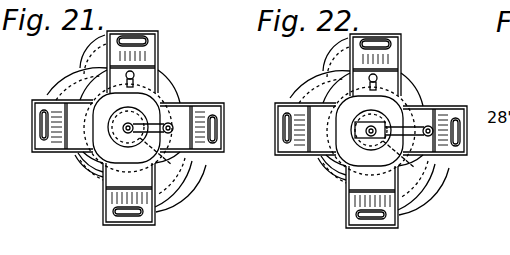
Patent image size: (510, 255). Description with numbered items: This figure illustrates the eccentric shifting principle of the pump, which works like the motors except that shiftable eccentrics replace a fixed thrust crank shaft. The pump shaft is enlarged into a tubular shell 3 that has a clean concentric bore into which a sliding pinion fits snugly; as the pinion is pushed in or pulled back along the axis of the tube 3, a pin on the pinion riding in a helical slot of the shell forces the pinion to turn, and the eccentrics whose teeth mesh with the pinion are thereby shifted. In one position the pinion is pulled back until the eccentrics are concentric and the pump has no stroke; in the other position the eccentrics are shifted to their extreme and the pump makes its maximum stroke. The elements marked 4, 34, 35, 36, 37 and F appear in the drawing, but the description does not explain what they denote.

In FIG. 21, the tubular shell 3 is at (168, 101).
In FIG. 22, the tubular shell 3 is at (435, 111).
In FIG. 21, the crank pin 4 is at (135, 108).
In FIG. 22, the crank pin 4 is at (393, 112).
In FIG. 21, the arc of swing 34 is at (93, 50).
In FIG. 22, the arc of swing 34 is at (327, 57).
In FIG. 21, the arc of swing 35 is at (62, 80).
In FIG. 22, the arc of swing 35 is at (311, 87).
In FIG. 21, the arc of swing 36 is at (170, 195).
In FIG. 22, the arc of swing 36 is at (423, 186).
In FIG. 21, the arc of swing 37 is at (203, 163).
In FIG. 22, the arc of swing 37 is at (439, 190).
In FIG. 21, the frame F is at (90, 167).
In FIG. 22, the frame F is at (349, 131).